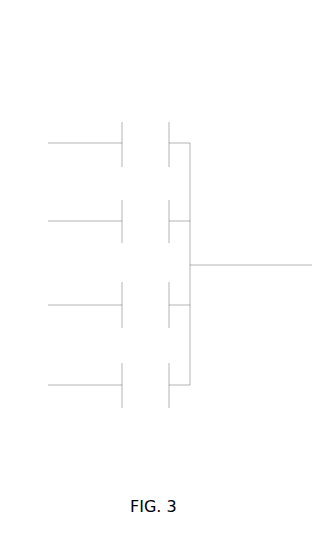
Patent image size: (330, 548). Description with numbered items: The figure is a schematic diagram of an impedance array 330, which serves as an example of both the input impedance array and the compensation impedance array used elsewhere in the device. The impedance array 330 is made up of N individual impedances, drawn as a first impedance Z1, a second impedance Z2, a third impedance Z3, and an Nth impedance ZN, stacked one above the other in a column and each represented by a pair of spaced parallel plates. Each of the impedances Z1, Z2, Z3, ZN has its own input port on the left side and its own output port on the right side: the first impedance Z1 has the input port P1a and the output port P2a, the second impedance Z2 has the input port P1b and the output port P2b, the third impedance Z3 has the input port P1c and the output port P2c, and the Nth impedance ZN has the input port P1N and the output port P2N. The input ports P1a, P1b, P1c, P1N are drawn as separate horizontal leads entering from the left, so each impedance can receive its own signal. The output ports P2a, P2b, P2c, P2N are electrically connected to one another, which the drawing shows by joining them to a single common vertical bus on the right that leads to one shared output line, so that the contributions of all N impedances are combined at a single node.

The impedance array 330 is at (162, 32).
The first impedance Z1 is at (143, 138).
The second impedance Z2 is at (145, 210).
The third impedance Z3 is at (146, 283).
The Nth impedance ZN is at (148, 390).
The input port P1a is at (121, 143).
The input port P1b is at (121, 221).
The input port P1c is at (121, 305).
The input port P1N is at (121, 385).
The output port P2a is at (190, 143).
The output port P2b is at (190, 221).
The output port P2c is at (191, 300).
The output port P2N is at (190, 383).